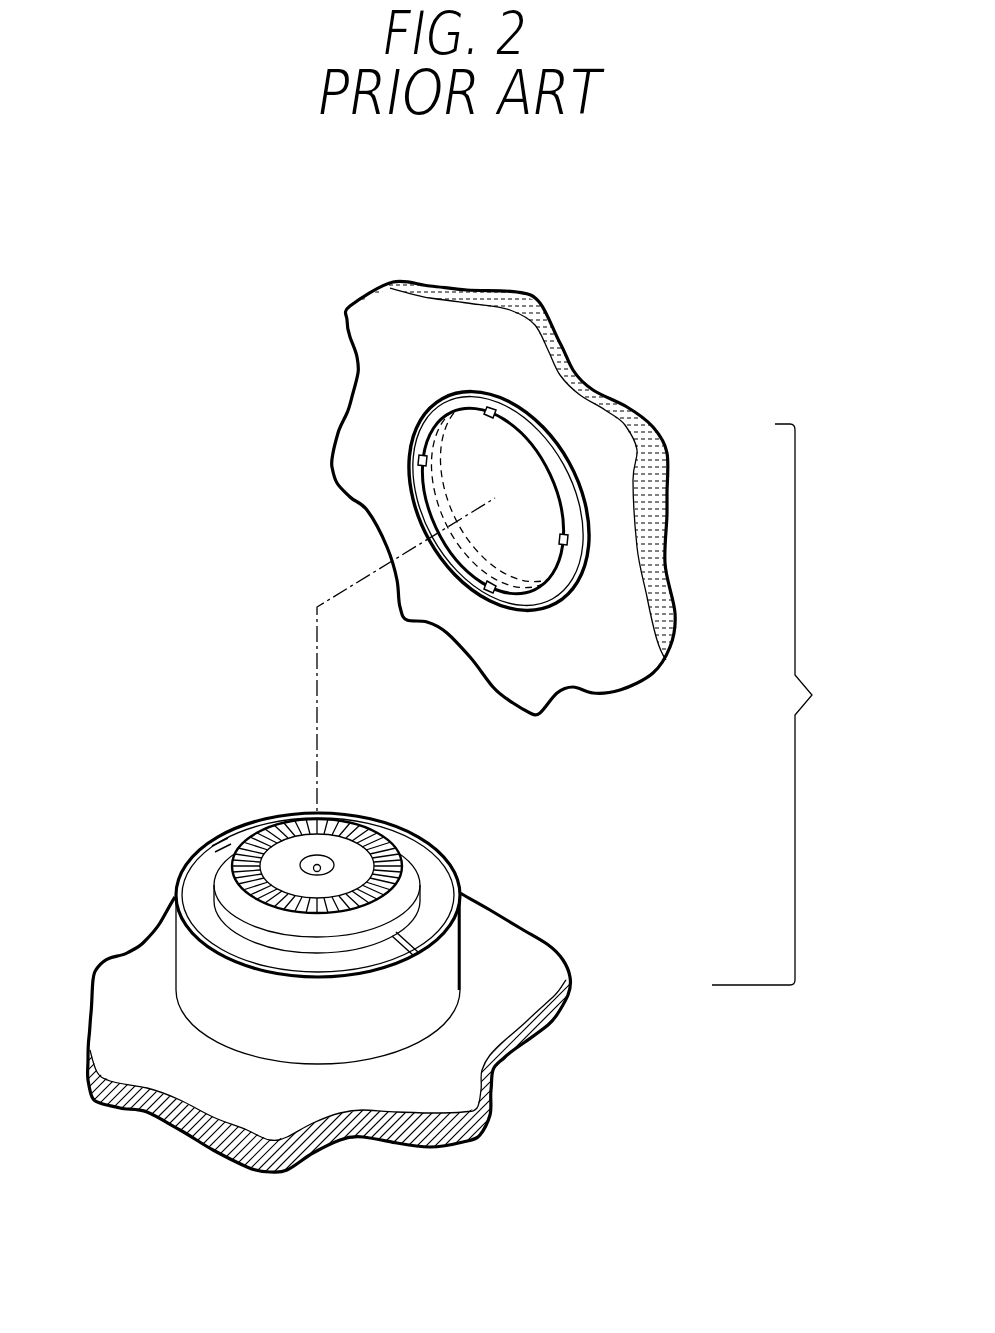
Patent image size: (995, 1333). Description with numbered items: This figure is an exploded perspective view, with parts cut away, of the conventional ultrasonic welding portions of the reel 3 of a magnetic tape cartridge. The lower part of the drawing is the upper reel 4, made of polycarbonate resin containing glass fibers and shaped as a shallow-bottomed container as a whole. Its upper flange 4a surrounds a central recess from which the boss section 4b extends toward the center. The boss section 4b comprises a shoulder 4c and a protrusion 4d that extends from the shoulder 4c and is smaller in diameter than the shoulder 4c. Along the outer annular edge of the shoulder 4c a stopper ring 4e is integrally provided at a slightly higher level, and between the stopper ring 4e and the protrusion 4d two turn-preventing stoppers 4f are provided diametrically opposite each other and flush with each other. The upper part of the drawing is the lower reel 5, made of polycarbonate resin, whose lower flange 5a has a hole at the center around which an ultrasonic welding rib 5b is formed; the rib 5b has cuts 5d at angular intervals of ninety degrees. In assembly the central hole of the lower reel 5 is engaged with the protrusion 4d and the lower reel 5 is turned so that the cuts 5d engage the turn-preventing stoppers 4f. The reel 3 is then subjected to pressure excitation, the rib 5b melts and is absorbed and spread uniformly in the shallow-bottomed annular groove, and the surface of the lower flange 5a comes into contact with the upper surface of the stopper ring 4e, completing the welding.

The reel 3 is at (432, 740).
The upper reel 4 is at (336, 971).
The upper flange 4a is at (467, 1067).
The boss section 4b is at (462, 960).
The shoulder 4c is at (395, 838).
The protrusion 4d is at (335, 838).
The stopper ring 4e is at (270, 960).
The turn-preventing stoppers 4f is at (218, 843).
The lower reel 5 is at (547, 498).
The lower flange 5a is at (577, 370).
The ultrasonic welding rib 5b is at (550, 462).
The cuts 5d is at (488, 408).